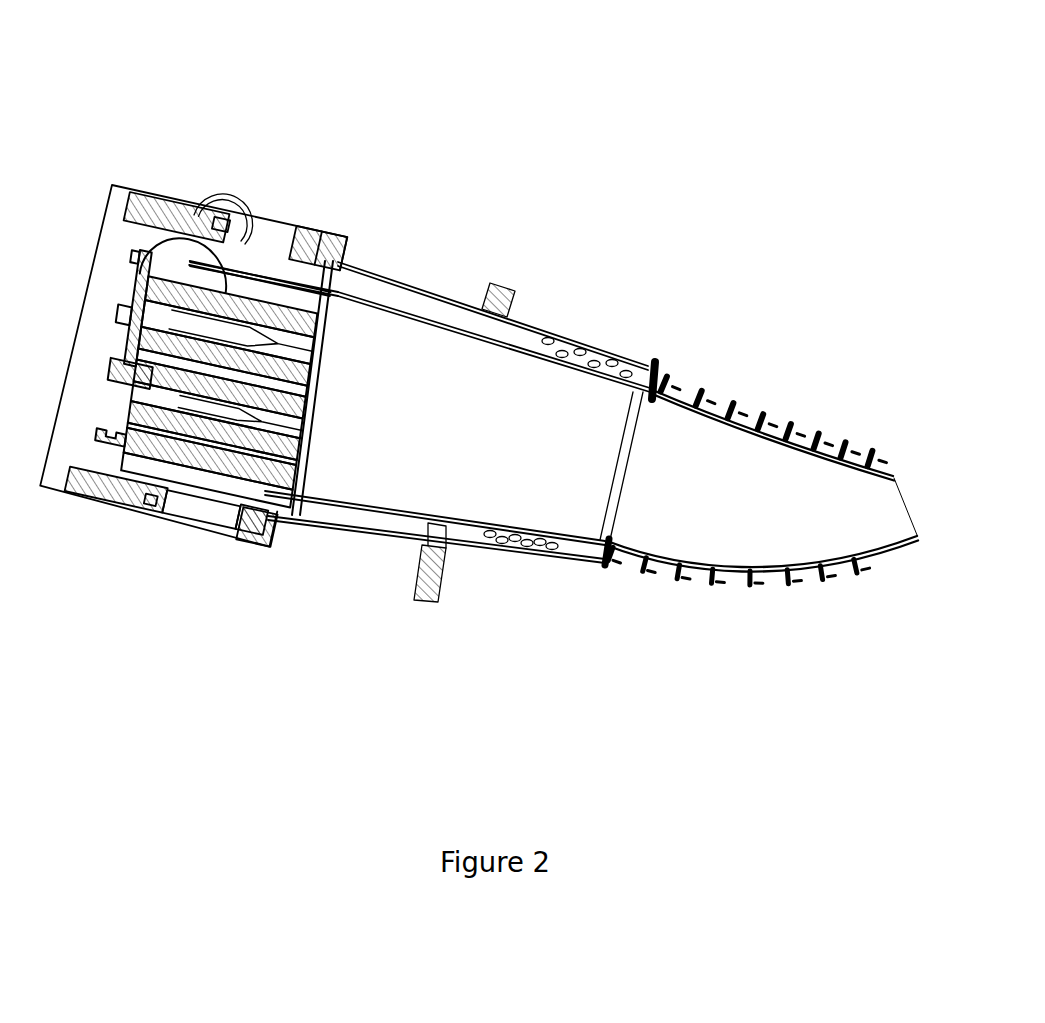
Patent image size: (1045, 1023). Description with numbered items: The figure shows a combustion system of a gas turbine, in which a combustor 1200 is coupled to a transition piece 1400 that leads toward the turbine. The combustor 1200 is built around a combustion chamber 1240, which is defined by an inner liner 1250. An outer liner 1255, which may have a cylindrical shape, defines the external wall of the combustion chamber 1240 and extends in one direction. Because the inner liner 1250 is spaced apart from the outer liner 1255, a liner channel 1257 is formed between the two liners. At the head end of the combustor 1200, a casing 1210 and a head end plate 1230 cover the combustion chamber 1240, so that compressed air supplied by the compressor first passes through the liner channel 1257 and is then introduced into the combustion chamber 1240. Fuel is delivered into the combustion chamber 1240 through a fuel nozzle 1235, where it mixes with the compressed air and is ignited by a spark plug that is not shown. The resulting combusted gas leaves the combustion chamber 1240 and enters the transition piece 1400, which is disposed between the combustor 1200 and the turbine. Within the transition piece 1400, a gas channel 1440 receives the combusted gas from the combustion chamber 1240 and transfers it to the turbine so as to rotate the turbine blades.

The combustor 1200 is at (676, 260).
The casing 1210 is at (162, 207).
The head end plate 1230 is at (90, 314).
The fuel nozzle 1235 is at (150, 370).
The combustion chamber 1240 is at (349, 480).
The inner liner 1250 is at (434, 303).
The outer liner 1255 is at (418, 284).
The liner channel 1257 is at (353, 285).
The transition piece 1400 is at (668, 357).
The gas channel 1440 is at (680, 540).